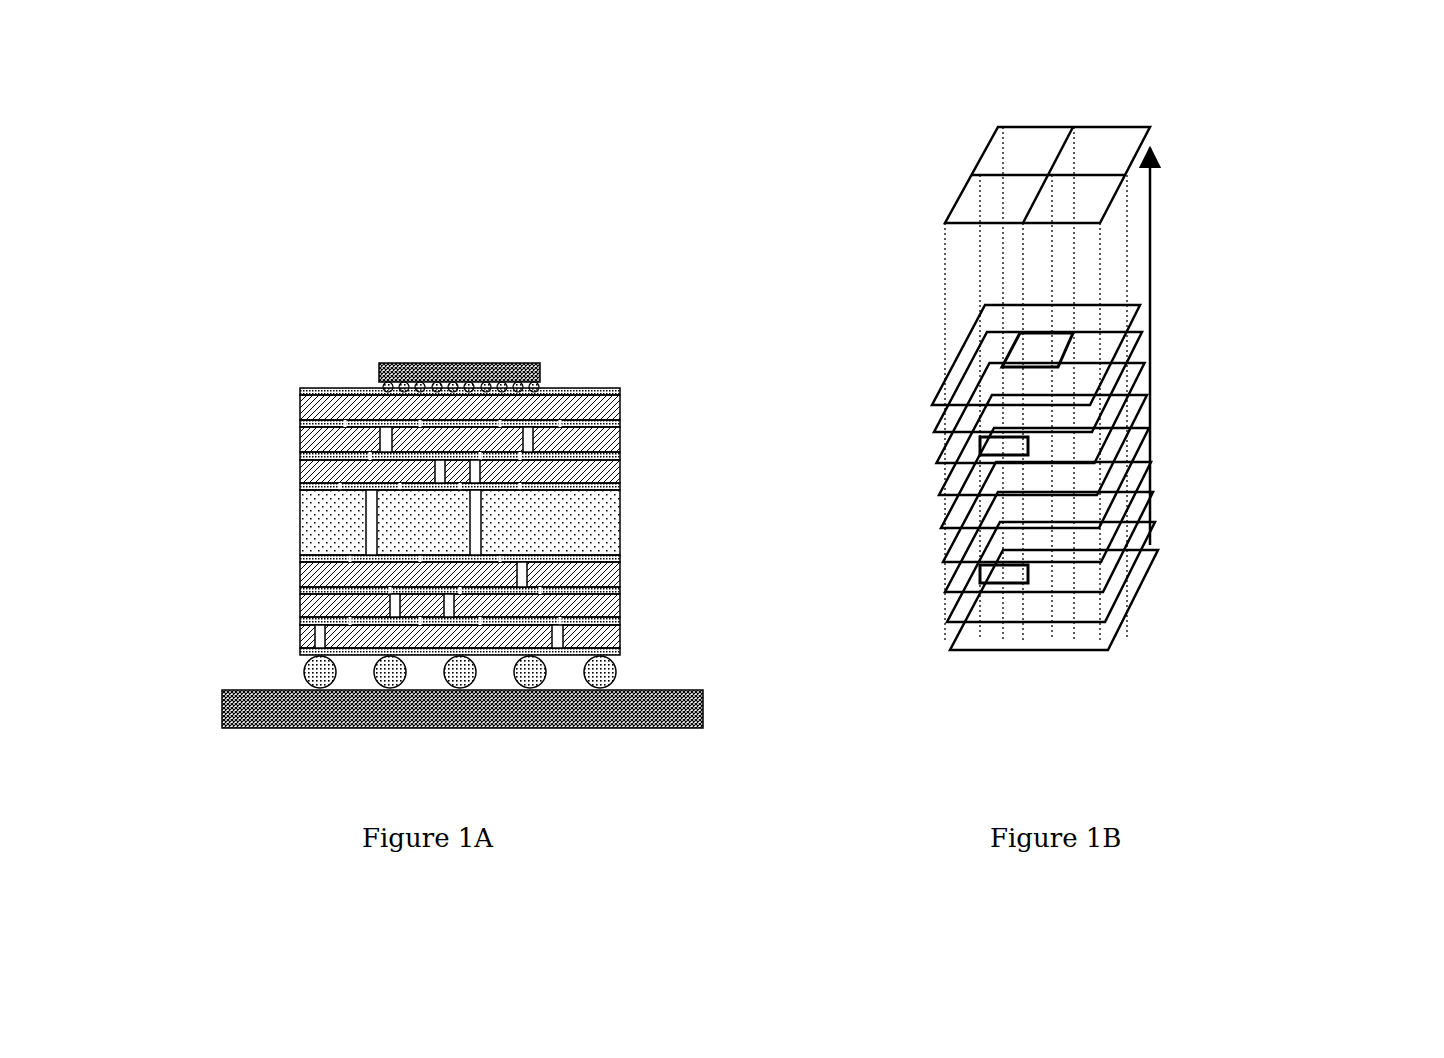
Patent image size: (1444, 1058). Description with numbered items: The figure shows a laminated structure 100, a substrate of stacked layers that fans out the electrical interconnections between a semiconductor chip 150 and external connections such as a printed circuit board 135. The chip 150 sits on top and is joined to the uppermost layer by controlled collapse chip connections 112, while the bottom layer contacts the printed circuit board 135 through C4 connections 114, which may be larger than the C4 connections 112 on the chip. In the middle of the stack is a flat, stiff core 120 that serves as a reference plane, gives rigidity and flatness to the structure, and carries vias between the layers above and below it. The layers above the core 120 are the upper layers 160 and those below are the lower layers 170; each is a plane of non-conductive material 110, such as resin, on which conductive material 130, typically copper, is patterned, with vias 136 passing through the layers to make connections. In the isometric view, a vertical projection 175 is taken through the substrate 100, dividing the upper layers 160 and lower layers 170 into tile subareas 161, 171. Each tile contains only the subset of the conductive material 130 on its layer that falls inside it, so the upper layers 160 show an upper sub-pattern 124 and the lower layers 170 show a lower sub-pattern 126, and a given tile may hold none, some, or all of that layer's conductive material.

In FIG. 1A, the laminated structure 100 is at (251, 307).
In FIG. 1A, the non-conductive material 110 is at (292, 407).
In FIG. 1A, the C4 ball type connections 112 is at (547, 384).
In FIG. 1A, the C4 connections 114 is at (628, 677).
In FIG. 1A, the core 120 is at (621, 523).
In FIG. 1B, the upper sub-pattern 124 is at (985, 447).
In FIG. 1B, the lower sub-pattern 126 is at (990, 572).
In FIG. 1A, the conductive material 130 is at (292, 648).
In FIG. 1A, the printed circuit board 135 is at (223, 707).
In FIG. 1A, the via 136 is at (535, 576).
In FIG. 1A, the semiconductor chip 150 is at (462, 362).
In FIG. 1B, the semiconductor chip 150 is at (1010, 352).
In FIG. 1B, the upper layers 160 is at (1173, 297).
In FIG. 1B, the tile subarea 161 is at (1105, 318).
In FIG. 1B, the lower layers 170 is at (1173, 457).
In FIG. 1B, the tile subarea 171 is at (1152, 567).
In FIG. 1B, the vertical projection 175 is at (1105, 150).